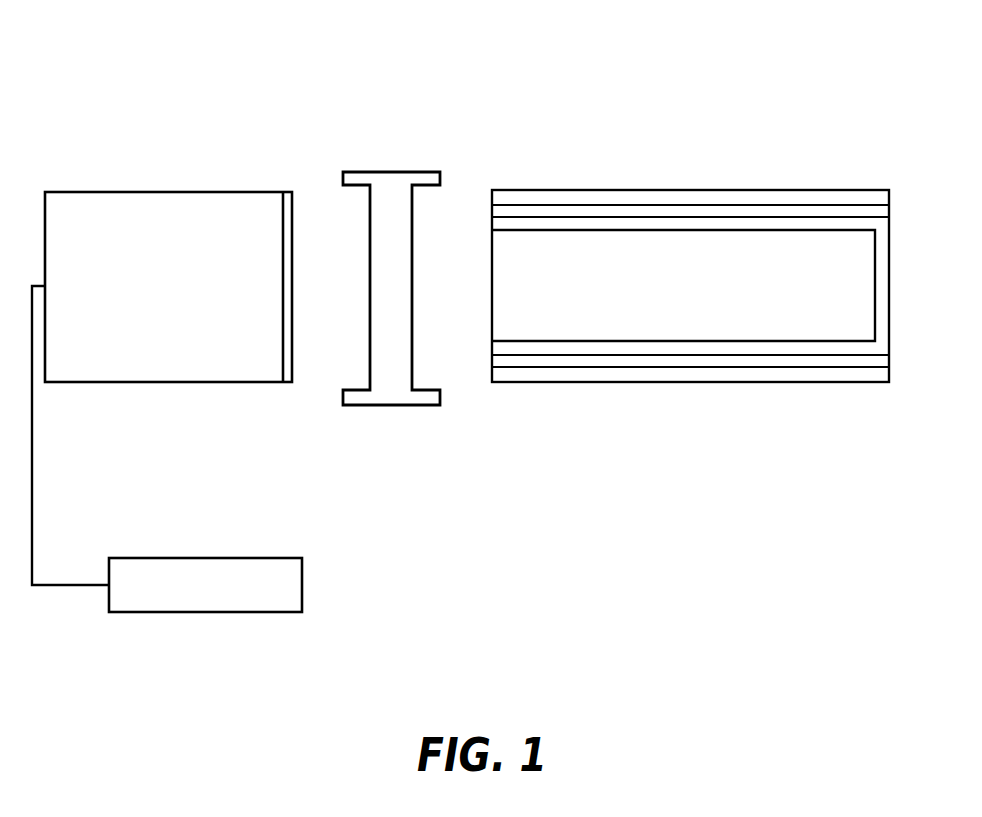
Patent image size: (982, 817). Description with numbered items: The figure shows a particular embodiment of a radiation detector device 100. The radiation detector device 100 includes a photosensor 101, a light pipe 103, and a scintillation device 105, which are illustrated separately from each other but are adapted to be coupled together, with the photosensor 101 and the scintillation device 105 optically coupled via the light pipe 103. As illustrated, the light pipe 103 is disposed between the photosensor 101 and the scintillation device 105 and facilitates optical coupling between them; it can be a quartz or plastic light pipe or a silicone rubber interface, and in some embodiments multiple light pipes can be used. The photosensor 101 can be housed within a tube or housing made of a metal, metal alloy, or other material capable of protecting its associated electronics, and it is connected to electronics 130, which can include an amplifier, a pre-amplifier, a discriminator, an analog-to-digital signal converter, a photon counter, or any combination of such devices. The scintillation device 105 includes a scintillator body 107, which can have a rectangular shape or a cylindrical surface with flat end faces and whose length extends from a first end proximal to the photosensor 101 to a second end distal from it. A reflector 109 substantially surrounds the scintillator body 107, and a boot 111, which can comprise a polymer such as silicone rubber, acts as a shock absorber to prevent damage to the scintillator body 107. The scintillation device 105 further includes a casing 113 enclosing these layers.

The radiation detector device 100 is at (122, 102).
The photosensor 101 is at (168, 287).
The light pipe 103 is at (397, 405).
The scintillation device 105 is at (690, 299).
The scintillator body 107 is at (668, 292).
The reflector 109 is at (742, 226).
The boot 111 is at (660, 212).
The casing 113 is at (595, 190).
The electronics 130 is at (205, 558).